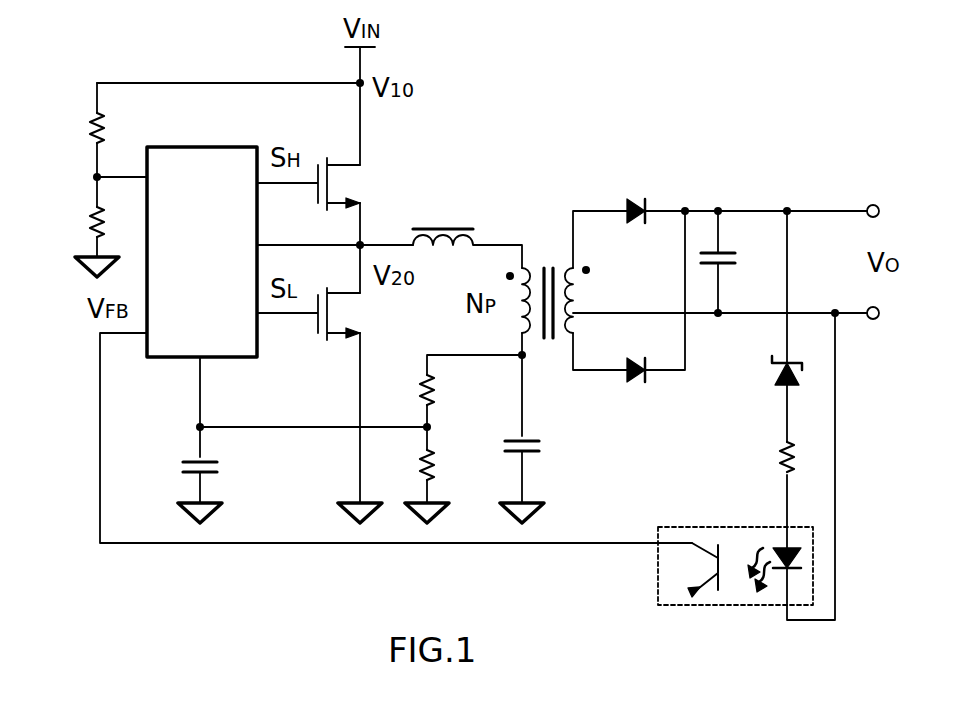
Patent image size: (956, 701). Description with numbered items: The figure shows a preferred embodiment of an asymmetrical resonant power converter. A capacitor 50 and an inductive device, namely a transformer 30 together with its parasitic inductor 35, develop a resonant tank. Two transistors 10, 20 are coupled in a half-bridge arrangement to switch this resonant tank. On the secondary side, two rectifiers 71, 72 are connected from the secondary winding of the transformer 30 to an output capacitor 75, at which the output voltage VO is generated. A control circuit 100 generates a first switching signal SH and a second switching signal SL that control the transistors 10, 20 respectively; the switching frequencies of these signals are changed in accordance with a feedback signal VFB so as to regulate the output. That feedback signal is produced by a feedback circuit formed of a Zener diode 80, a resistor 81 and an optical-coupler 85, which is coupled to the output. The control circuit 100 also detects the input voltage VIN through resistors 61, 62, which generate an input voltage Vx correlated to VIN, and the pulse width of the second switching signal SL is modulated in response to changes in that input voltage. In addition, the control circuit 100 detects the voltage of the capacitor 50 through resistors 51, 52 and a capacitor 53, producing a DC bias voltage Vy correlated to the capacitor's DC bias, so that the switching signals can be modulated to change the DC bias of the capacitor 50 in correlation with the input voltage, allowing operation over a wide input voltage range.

The control circuit 100 is at (206, 146).
The transistor 10 is at (350, 190).
The transistor 20 is at (350, 320).
The transformer 30 is at (548, 262).
The parasitic inductor 35 is at (446, 225).
The capacitor 50 is at (542, 448).
The resistor 51 is at (438, 388).
The resistor 52 is at (438, 462).
The capacitor 53 is at (220, 465).
The resistor 61 is at (84, 122).
The resistor 62 is at (84, 210).
The rectifier 71 is at (638, 200).
The rectifier 72 is at (634, 386).
The output capacitor 75 is at (734, 264).
The Zener diode 80 is at (770, 374).
The resistor 81 is at (770, 464).
The optical-coupler 85 is at (660, 578).